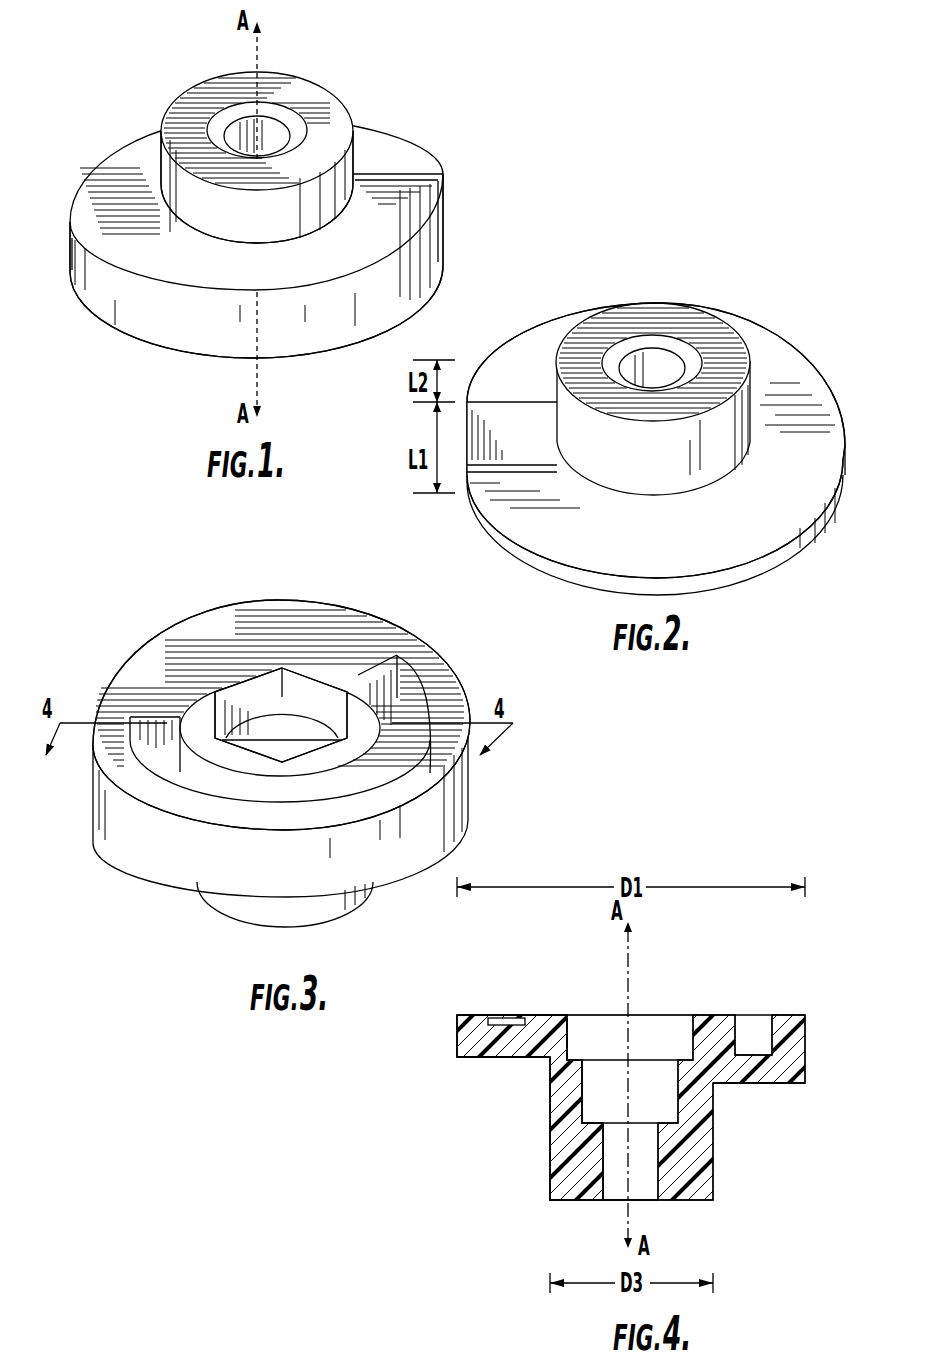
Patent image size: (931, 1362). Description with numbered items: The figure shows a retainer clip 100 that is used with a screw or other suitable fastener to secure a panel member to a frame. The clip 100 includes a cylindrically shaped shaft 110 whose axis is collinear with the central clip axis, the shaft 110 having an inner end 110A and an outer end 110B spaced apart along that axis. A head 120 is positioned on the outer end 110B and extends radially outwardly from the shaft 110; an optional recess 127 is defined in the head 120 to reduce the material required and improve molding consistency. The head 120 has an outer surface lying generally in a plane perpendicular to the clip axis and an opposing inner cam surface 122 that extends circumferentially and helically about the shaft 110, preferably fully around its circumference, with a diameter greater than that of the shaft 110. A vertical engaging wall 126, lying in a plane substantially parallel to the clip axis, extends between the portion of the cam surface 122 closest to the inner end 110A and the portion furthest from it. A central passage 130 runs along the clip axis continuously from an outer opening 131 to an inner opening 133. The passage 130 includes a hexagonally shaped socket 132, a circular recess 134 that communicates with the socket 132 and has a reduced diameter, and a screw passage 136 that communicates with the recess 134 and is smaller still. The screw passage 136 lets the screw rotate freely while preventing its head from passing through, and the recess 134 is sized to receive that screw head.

In FIG. 1, the retainer clip 100 is at (352, 62).
In FIG. 2, the retainer clip 100 is at (744, 297).
In FIG. 3, the retainer clip 100 is at (459, 648).
In FIG. 4, the retainer clip 100 is at (474, 1118).
In FIG. 1, the shaft 110 is at (160, 182).
In FIG. 3, the shaft 110 is at (330, 903).
In FIG. 4, the shaft 110 is at (718, 1165).
In FIG. 1, the inner end 110A is at (333, 154).
In FIG. 2, the inner end 110A is at (727, 363).
In FIG. 1, the outer end 110B is at (150, 222).
In FIG. 1, the head 120 is at (400, 259).
In FIG. 2, the head 120 is at (837, 494).
In FIG. 3, the head 120 is at (462, 775).
In FIG. 4, the head 120 is at (807, 1048).
In FIG. 2, the cam surface 122 is at (803, 427).
In FIG. 4, the cam surface 122 is at (751, 1083).
In FIG. 2, the vertical engaging wall 126 is at (520, 418).
In FIG. 3, the recess 127 is at (160, 760).
In FIG. 4, the recess 127 is at (757, 1022).
In FIG. 1, the central passage 130 is at (283, 115).
In FIG. 4, the central passage 130 is at (655, 1002).
In FIG. 3, the outer opening 131 is at (248, 671).
In FIG. 4, the outer opening 131 is at (568, 1015).
In FIG. 3, the hexagonally shaped socket 132 is at (313, 685).
In FIG. 4, the hexagonally shaped socket 132 is at (606, 1020).
In FIG. 1, the inner opening 133 is at (285, 144).
In FIG. 4, the inner opening 133 is at (607, 1200).
In FIG. 4, the circular recess 134 is at (604, 1110).
In FIG. 4, the screw passage 136 is at (615, 1175).